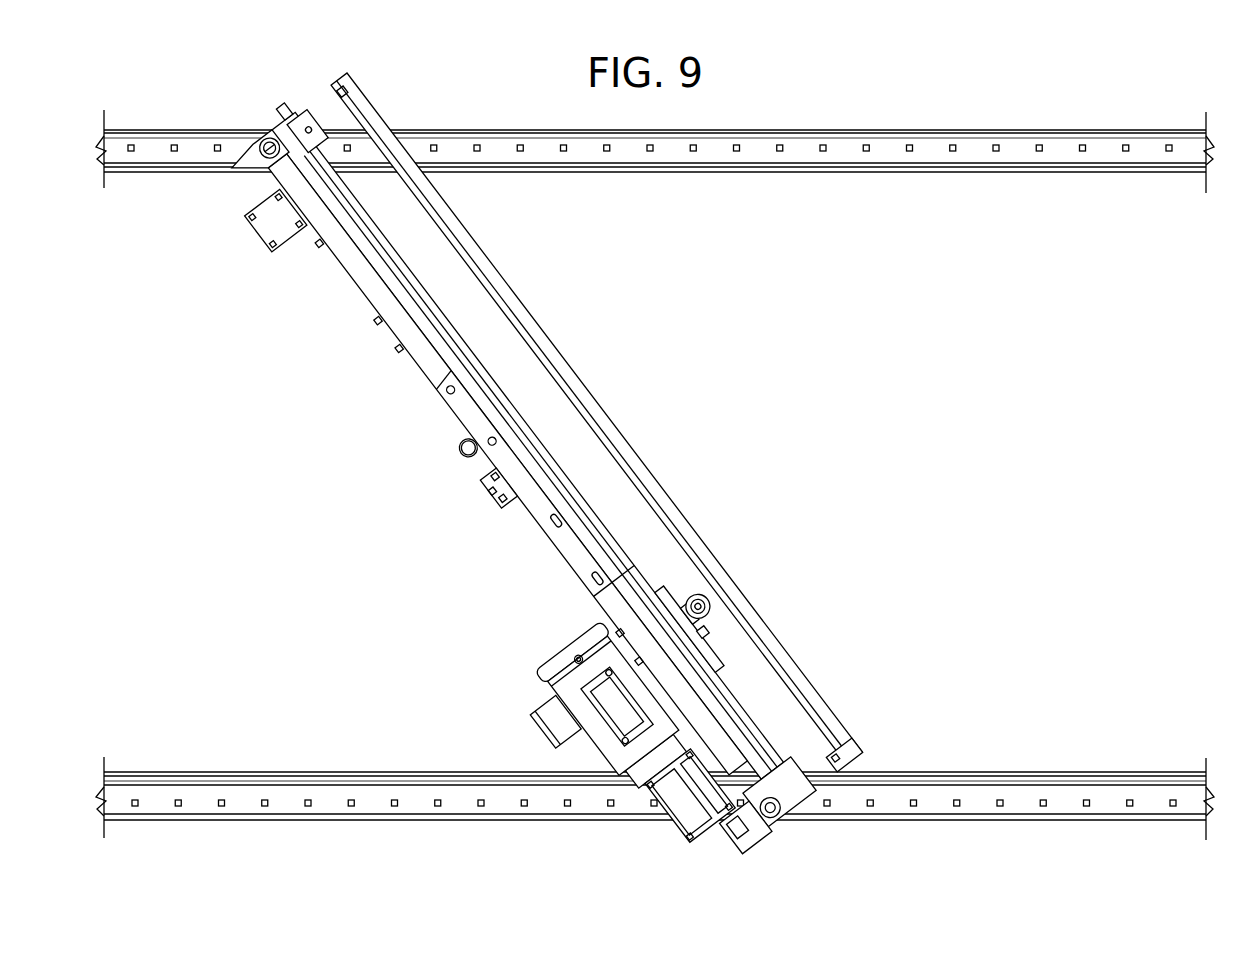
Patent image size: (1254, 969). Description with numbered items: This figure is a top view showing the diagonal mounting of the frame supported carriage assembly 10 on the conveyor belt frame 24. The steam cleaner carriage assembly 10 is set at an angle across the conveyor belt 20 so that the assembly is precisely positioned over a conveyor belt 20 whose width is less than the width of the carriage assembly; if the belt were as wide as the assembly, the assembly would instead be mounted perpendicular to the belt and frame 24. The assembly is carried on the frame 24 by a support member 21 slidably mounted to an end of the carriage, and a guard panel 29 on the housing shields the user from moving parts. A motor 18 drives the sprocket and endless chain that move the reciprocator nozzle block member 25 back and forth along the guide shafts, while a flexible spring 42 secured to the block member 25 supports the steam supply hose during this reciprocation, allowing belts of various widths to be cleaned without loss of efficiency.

The frame supported carriage assembly 10 is at (520, 474).
The motor 18 is at (548, 660).
The conveyor belt 20 is at (909, 436).
The support member 21 is at (755, 825).
The conveyor belt frame 24 is at (848, 148).
The reciprocator nozzle block member 25 is at (703, 633).
The guard panel 29 is at (520, 298).
The flexible spring 42 is at (700, 596).